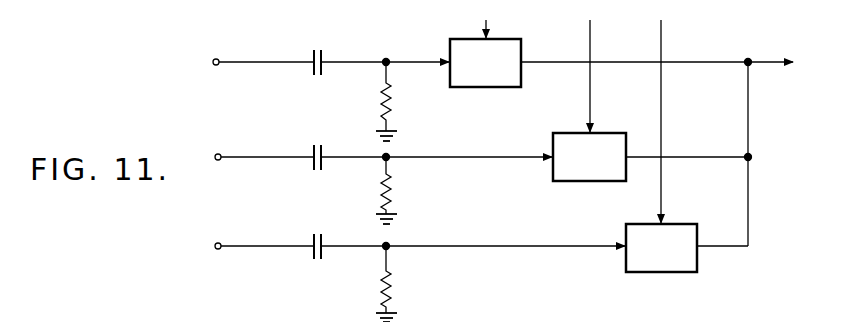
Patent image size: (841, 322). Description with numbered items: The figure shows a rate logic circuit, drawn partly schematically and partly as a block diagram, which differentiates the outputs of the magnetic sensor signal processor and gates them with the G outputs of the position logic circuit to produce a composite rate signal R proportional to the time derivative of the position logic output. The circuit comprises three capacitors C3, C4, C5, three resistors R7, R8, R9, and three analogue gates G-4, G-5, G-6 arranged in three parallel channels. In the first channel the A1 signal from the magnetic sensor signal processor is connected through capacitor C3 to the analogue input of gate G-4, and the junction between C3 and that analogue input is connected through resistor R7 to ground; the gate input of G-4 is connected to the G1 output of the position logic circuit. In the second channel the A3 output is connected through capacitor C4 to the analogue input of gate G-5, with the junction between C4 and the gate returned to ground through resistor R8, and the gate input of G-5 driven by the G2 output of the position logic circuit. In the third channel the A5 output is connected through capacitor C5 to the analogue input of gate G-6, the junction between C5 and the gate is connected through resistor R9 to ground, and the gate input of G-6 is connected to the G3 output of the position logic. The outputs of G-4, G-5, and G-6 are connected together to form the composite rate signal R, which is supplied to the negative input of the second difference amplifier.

The A1 signal A1 is at (245, 64).
The A3 output A3 is at (248, 159).
The A5 output A5 is at (248, 248).
The capacitor C3 is at (322, 50).
The capacitor C4 is at (322, 145).
The capacitor C5 is at (322, 234).
The resistor R7 is at (397, 101).
The resistor R8 is at (398, 190).
The resistor R9 is at (398, 284).
The analogue gate G-4 is at (485, 63).
The analogue gate G-5 is at (589, 157).
The analogue gate G-6 is at (661, 248).
The G1 output G1 is at (484, 19).
The G2 output G2 is at (585, 66).
The G3 output G3 is at (656, 112).
The composite rate signal R is at (657, 144).